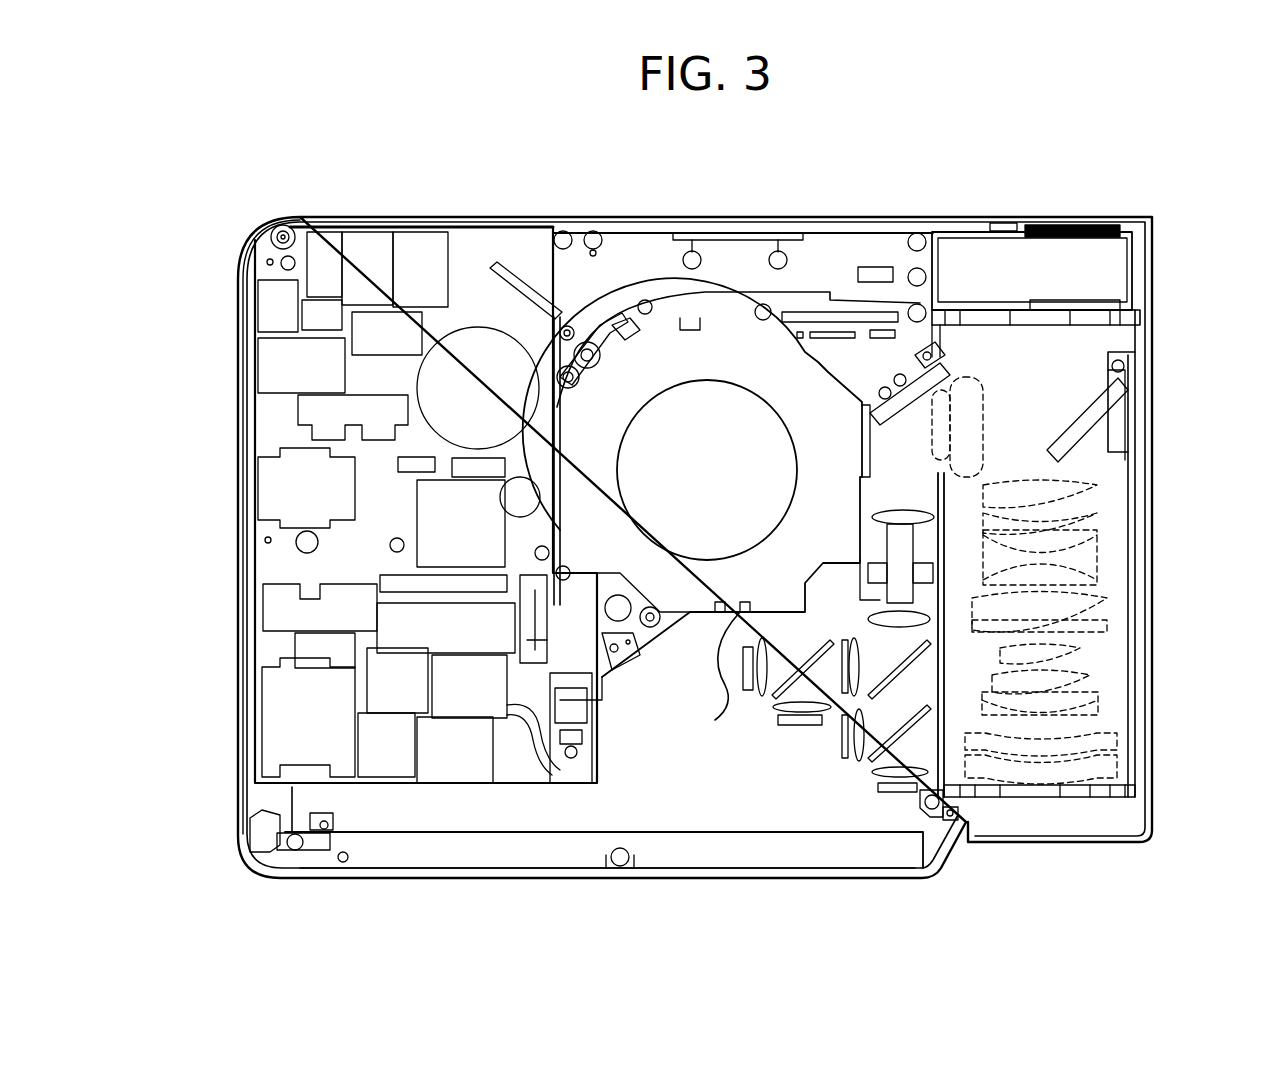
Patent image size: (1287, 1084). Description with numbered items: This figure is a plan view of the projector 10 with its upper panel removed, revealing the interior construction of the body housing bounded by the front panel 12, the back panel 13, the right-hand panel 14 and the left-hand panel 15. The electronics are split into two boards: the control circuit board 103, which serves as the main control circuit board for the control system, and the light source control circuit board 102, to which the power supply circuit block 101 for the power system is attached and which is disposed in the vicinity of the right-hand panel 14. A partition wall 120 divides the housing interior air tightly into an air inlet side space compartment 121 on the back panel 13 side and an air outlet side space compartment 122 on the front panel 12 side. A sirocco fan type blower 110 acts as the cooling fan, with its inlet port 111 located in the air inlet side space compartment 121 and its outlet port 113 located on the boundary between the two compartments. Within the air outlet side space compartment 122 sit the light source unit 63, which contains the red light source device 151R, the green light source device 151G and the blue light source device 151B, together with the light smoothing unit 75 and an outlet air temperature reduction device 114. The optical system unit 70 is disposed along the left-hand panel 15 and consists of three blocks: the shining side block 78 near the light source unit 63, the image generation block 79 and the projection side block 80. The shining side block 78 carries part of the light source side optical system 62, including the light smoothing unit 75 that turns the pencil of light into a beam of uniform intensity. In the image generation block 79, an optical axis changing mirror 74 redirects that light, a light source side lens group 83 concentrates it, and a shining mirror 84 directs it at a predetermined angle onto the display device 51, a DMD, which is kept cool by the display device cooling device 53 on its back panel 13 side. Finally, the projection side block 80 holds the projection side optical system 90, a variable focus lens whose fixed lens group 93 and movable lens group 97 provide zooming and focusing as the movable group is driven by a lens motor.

The projector 10 is at (1175, 212).
The front panel 12 is at (636, 872).
The back panel 13 is at (475, 226).
The right-hand panel 14 is at (243, 598).
The left-hand panel 15 is at (1150, 353).
The display device 51 is at (1040, 320).
The display device cooling device 53 is at (958, 268).
The light source side optical system 62 is at (915, 467).
The light source unit 63 is at (800, 772).
The optical system unit 70 is at (1120, 471).
The optical axis changing mirror 74 is at (875, 390).
The light smoothing unit 75 is at (900, 578).
The shining side block 78 is at (928, 592).
The image generation block 79 is at (1087, 312).
The projection side block 80 is at (1110, 720).
The light source side lens group 83 is at (990, 435).
The shining mirror 84 is at (1108, 394).
The projection side optical system 90 is at (1107, 512).
The fixed lens group 93 is at (1087, 548).
The movable lens group 97 is at (1090, 682).
The power supply circuit block 101 is at (282, 378).
The light source control circuit board 102 is at (282, 648).
The control circuit board 103 is at (587, 280).
The blower 110 is at (670, 352).
The inlet port 111 is at (742, 420).
The outlet port 113 is at (712, 686).
The outlet air temperature reduction device 114 is at (563, 870).
The partition wall 120 is at (383, 792).
The air inlet side space compartment 121 is at (635, 275).
The air outlet side space compartment 122 is at (450, 805).
The green light source device 151G is at (767, 728).
The red light source device 151R is at (852, 770).
The blue light source device 151B is at (905, 802).